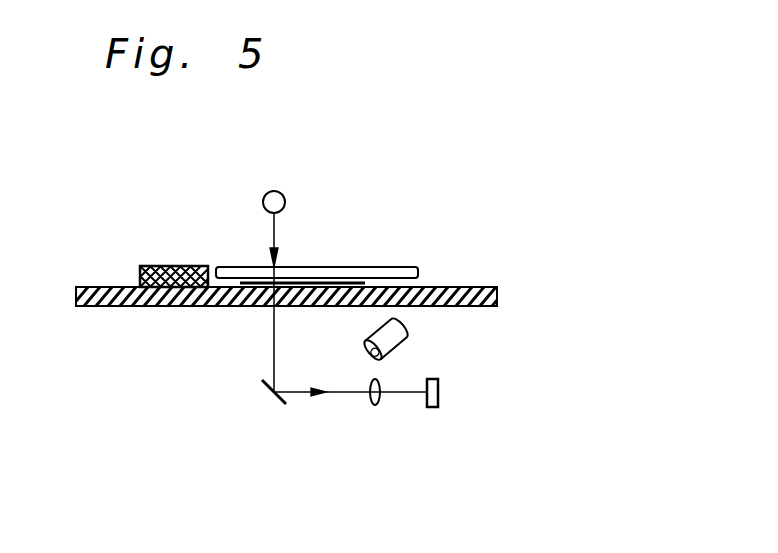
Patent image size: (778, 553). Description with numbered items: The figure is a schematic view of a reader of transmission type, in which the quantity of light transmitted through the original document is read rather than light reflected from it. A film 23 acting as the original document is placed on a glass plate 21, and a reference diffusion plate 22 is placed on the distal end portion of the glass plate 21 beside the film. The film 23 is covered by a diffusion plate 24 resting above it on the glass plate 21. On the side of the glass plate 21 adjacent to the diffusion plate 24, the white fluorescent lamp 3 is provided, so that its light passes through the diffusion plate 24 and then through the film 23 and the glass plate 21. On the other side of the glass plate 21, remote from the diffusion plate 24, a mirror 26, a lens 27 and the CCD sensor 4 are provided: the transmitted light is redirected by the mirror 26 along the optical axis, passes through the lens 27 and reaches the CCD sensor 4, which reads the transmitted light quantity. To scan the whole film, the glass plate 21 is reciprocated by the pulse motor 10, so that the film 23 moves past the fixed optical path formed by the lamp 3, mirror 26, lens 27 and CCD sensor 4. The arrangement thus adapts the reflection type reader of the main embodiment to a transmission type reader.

The white fluorescent lamp 3 is at (278, 192).
The CCD sensor 4 is at (438, 393).
The pulse motor 10 is at (410, 330).
The glass plate 21 is at (497, 287).
The reference diffusion plate 22 is at (170, 266).
The film 23 is at (245, 290).
The diffusion plate 24 is at (372, 267).
The mirror 26 is at (284, 402).
The lens 27 is at (375, 405).